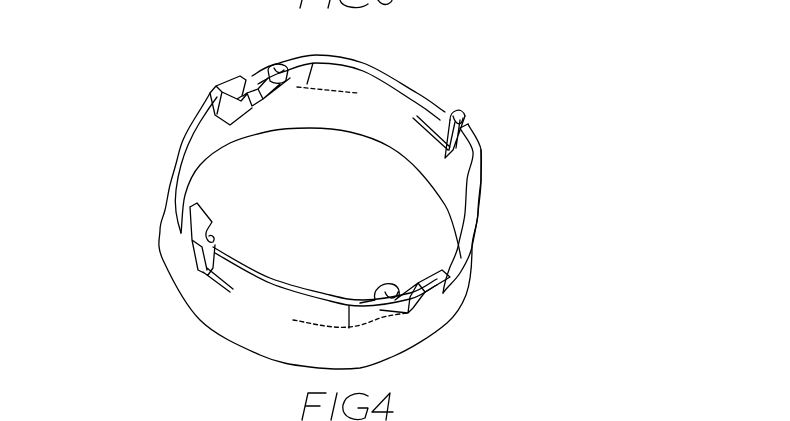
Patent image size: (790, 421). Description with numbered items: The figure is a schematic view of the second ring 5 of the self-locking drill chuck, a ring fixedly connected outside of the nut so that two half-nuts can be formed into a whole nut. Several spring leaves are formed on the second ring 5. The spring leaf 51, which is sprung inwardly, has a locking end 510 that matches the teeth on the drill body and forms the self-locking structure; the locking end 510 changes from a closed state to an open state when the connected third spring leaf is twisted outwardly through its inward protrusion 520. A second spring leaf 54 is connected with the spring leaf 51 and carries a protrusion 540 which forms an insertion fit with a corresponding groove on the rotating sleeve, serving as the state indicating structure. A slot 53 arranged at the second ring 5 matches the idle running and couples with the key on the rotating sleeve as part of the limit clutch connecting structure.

The second ring 5 is at (200, 285).
The spring leaf 51 is at (219, 53).
The locking end 510 is at (227, 123).
The inward protrusion 520 is at (277, 66).
The slot 53 is at (477, 200).
The second spring leaf 54 is at (500, 99).
The protrusion 540 is at (458, 113).